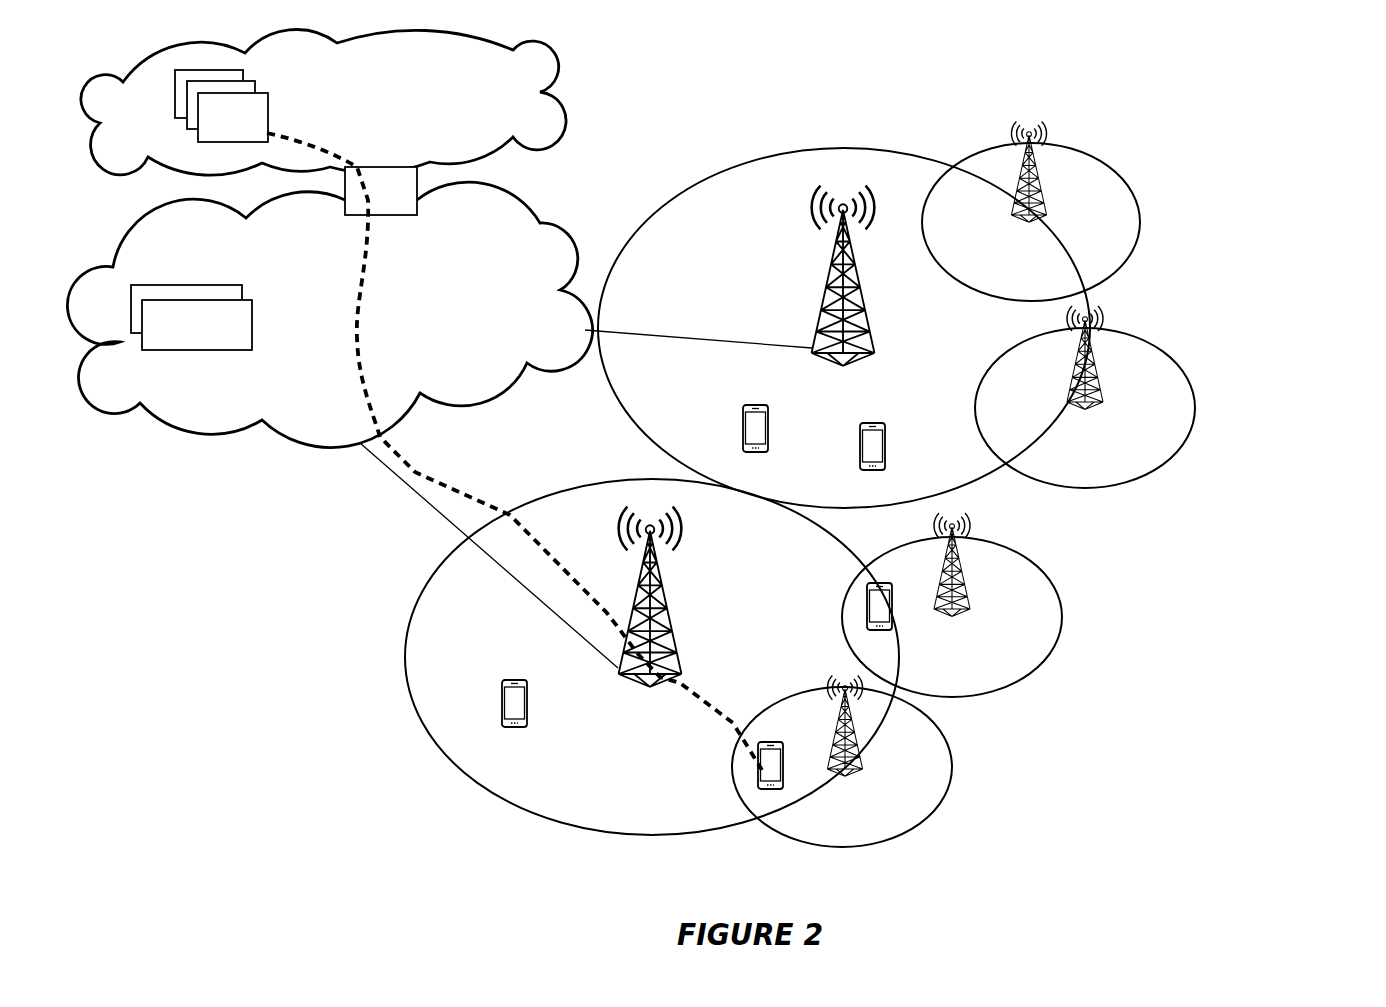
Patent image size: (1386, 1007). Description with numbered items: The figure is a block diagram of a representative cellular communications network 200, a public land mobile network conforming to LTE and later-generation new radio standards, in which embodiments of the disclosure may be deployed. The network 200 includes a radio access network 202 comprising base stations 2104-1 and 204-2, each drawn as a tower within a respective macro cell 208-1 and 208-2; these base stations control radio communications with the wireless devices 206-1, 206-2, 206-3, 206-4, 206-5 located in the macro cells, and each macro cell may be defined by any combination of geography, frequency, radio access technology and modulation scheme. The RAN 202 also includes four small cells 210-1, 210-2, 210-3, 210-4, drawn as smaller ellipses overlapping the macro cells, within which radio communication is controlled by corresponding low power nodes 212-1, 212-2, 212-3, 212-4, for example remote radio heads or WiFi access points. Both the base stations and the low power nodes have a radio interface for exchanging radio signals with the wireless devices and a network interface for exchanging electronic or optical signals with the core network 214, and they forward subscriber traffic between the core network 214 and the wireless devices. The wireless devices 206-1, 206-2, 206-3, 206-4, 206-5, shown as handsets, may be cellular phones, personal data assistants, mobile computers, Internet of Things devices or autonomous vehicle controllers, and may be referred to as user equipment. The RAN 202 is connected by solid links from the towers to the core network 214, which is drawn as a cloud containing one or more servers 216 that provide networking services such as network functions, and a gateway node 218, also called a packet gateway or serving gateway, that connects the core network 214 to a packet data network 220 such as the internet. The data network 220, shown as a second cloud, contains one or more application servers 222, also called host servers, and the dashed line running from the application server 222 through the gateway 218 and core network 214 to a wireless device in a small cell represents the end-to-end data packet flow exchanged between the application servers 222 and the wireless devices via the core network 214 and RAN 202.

The cellular communications network 200 is at (1264, 118).
The radio access network 202 is at (1138, 695).
The base station 204-2 is at (872, 330).
The base station 2104-1 is at (680, 645).
The wireless device 206-1 is at (522, 728).
The wireless device 206-2 is at (776, 742).
The wireless device 206-3 is at (880, 631).
The wireless device 206-4 is at (770, 428).
The wireless device 206-5 is at (885, 448).
The macro cell 208-1 is at (500, 643).
The macro cell 208-2 is at (750, 251).
The small cell 210-1 is at (952, 767).
The small cell 210-2 is at (1063, 617).
The small cell 210-3 is at (1195, 408).
The small cell 210-4 is at (1140, 222).
The low power node 212-1 is at (852, 775).
The low power node 212-2 is at (960, 610).
The low power node 212-3 is at (1093, 403).
The low power node 212-4 is at (1033, 218).
The core network 214 is at (425, 368).
The server 216 is at (208, 351).
The gateway node 218 is at (407, 216).
The data network 220 is at (425, 130).
The application server 222 is at (268, 120).